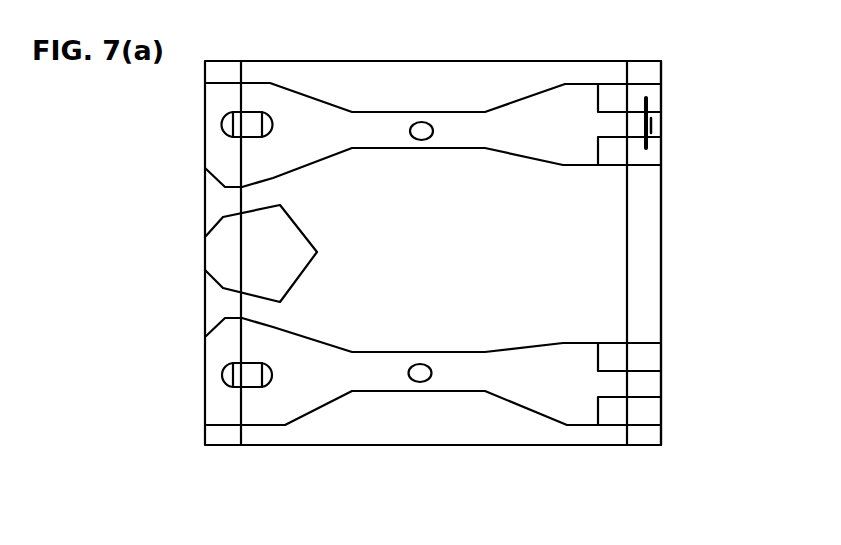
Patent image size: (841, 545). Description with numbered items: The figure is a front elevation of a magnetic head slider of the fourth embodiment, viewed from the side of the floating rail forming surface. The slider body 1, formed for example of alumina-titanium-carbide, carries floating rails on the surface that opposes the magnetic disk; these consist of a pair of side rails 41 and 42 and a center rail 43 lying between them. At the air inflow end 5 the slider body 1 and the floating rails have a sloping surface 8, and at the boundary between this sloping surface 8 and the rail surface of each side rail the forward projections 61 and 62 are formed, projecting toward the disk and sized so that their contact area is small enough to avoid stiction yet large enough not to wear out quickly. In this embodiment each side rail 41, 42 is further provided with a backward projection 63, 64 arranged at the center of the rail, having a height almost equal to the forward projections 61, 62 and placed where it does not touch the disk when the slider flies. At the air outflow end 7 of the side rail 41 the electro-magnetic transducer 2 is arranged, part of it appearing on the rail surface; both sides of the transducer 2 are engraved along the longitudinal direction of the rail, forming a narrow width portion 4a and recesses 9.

The slider body 1 is at (483, 433).
The electro-magnetic transducer 2 is at (651, 130).
The narrow width portion 4a is at (615, 122).
The air inflow end 5 is at (203, 190).
The air outflow end 7 is at (663, 242).
The sloping surface 8 is at (215, 347).
The recesses 9 is at (655, 154).
The side rail 41 is at (465, 134).
The side rail 42 is at (453, 380).
The center rail 43 is at (215, 257).
The forward projection 61 is at (252, 121).
The forward projection 62 is at (250, 382).
The backward projection 63 is at (420, 128).
The backward projection 64 is at (420, 381).